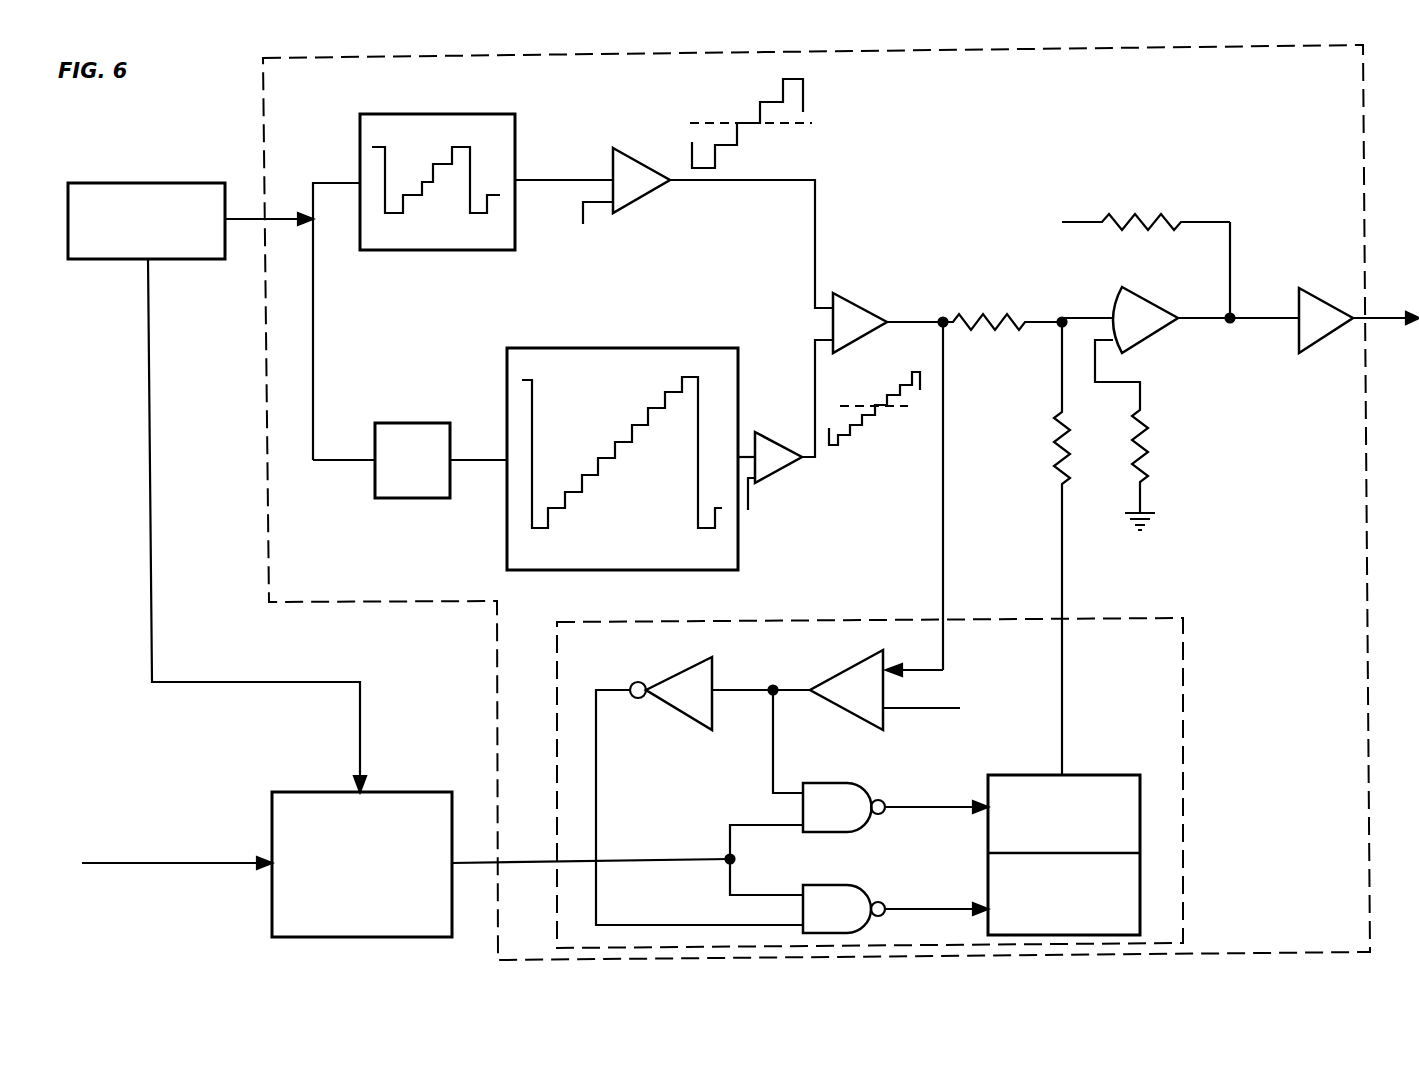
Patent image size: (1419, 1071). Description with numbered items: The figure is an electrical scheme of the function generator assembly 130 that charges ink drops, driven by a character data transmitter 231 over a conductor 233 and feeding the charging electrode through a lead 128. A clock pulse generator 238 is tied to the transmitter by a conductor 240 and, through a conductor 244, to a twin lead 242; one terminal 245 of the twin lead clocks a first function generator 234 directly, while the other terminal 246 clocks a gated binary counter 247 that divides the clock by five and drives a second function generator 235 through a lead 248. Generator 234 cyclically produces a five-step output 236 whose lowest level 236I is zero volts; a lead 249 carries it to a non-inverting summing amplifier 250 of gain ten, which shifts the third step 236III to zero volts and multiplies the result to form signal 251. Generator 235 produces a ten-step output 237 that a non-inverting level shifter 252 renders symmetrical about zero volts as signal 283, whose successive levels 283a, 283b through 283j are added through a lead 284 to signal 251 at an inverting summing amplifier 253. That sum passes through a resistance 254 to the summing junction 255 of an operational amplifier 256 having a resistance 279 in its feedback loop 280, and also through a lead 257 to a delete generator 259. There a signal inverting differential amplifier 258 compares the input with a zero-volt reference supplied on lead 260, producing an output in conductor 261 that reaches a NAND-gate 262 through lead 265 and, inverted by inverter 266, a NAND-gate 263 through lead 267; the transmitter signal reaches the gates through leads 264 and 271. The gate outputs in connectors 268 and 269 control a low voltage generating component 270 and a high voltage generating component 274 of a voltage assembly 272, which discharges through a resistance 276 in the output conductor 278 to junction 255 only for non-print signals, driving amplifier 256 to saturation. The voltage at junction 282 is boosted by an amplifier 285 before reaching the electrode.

The lead 128 is at (1391, 317).
The function generator assembly 130 is at (258, 444).
The character data transmitter 231 is at (307, 792).
The conductor 233 is at (475, 862).
The first function generator 234 is at (360, 147).
The second function generator 235 is at (578, 348).
The output 236 is at (424, 160).
The lowest level of output 236I is at (393, 213).
The third step of output 236III is at (422, 182).
The output 237 is at (596, 432).
The clock pulse generator 238 is at (98, 260).
The conductor 240 is at (148, 418).
The twin lead 242 is at (314, 342).
The conductor 244 is at (243, 222).
The line to generator 234 245 is at (340, 187).
The terminal 246 is at (332, 462).
The gated binary counter 247 is at (414, 498).
The lead 248 is at (478, 458).
The lead 249 is at (553, 180).
The non-inverting summing amplifier 250 is at (646, 200).
The signal 251 is at (790, 82).
The non-inverting level shifter 252 is at (778, 432).
The inverting summing amplifier 253 is at (862, 310).
The resistance 254 is at (990, 326).
The summing junction 255 is at (1060, 318).
The operational amplifier 256 is at (1198, 276).
The lead 257 is at (944, 463).
The signal inverting differential amplifier 258 is at (852, 670).
The delete generator 259 is at (1197, 680).
The lead 260 is at (913, 710).
The conductor 261 is at (750, 689).
The NAND-gate 262 is at (838, 786).
The NAND-gate 263 is at (848, 890).
The lead 264 is at (766, 824).
The lead 265 is at (772, 734).
The inverter 266 is at (686, 716).
The lead 267 is at (597, 782).
The connector 268 is at (929, 810).
The connector 269 is at (930, 908).
The low voltage generating component 270 is at (1085, 826).
The lead 271 is at (745, 896).
The voltage assembly 272 is at (1155, 853).
The high voltage generating component 274 is at (1088, 902).
The resistance 276 is at (1060, 450).
The output conductor 278 is at (1062, 572).
The resistance 279 is at (1133, 222).
The feedback loop 280 is at (1213, 222).
The junction 282 is at (1233, 317).
The output signal 283 is at (890, 438).
The level 283a is at (830, 452).
The level 283b is at (832, 440).
The voltage 283j is at (915, 372).
The lead 284 is at (815, 373).
The amplifier 285 is at (1310, 352).